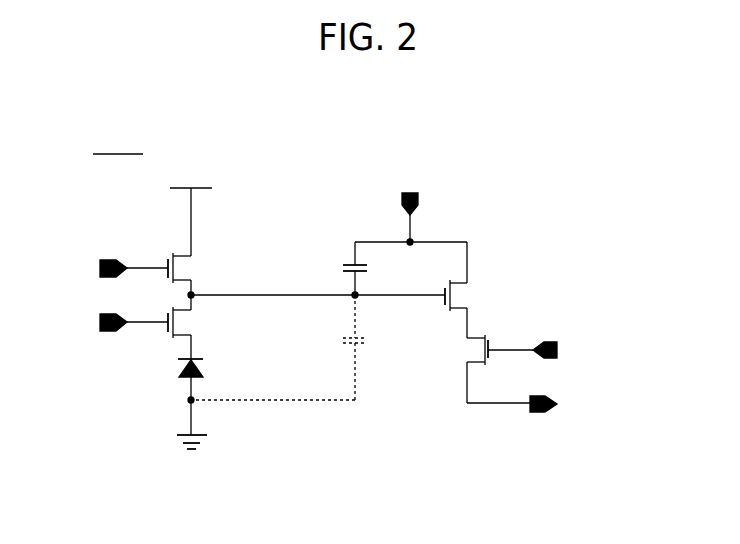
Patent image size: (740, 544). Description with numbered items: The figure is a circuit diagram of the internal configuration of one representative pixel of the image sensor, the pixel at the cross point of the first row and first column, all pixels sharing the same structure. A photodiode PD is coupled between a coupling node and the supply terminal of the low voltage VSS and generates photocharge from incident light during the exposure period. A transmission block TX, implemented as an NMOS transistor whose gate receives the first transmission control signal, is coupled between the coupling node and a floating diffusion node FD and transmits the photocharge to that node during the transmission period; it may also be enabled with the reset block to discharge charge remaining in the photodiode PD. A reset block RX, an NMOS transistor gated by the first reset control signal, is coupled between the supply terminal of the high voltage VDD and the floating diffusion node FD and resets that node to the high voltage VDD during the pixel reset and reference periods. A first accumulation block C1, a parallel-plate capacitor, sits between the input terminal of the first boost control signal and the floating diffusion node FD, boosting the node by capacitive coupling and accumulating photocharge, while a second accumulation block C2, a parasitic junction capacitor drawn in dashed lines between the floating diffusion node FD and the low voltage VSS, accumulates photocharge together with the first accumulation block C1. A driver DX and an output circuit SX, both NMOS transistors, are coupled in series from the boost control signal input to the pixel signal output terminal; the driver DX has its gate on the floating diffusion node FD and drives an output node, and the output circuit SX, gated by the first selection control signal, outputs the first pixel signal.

The high voltage VDD is at (191, 209).
The low voltage VSS is at (191, 438).
The reset block RX is at (169, 274).
The transmission block TX is at (169, 327).
The photodiode PD is at (205, 380).
The floating diffusion node FD is at (316, 307).
The first accumulation block C1 is at (368, 268).
The second accumulation block C2 is at (291, 347).
The driver DX is at (467, 290).
The output circuit SX is at (491, 369).